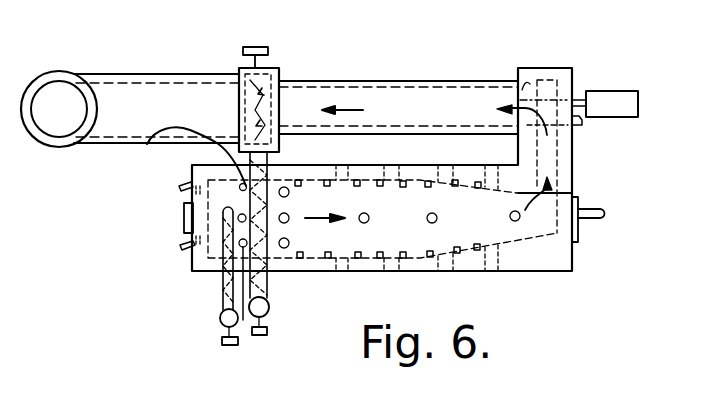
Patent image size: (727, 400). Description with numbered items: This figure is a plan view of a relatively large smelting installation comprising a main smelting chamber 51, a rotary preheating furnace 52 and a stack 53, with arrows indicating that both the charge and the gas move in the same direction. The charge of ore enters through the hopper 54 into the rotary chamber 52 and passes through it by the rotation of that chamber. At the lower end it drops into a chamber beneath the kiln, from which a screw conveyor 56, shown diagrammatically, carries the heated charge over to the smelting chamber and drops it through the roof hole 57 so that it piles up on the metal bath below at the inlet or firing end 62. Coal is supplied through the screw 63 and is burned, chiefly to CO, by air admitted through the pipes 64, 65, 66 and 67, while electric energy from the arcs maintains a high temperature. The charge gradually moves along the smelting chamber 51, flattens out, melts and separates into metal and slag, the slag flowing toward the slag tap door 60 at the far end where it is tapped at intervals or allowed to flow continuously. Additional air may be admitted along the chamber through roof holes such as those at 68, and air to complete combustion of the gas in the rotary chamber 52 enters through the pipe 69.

The main smelting chamber 51 is at (382, 169).
The preheating furnace 52 is at (448, 97).
The stack 53 is at (55, 90).
The hopper 54 is at (615, 97).
The screw conveyor 56 is at (239, 84).
The roof hole 57 is at (250, 217).
The slag tap door 60 is at (578, 200).
The inlet or firing end 62 is at (222, 250).
The screw 63 is at (222, 302).
The air pipe 64 is at (243, 320).
The air pipe 65 is at (150, 147).
The air pipe 66 is at (175, 243).
The air pipe 67 is at (167, 189).
The roof holes 68 is at (360, 246).
The air pipe 69 is at (581, 121).